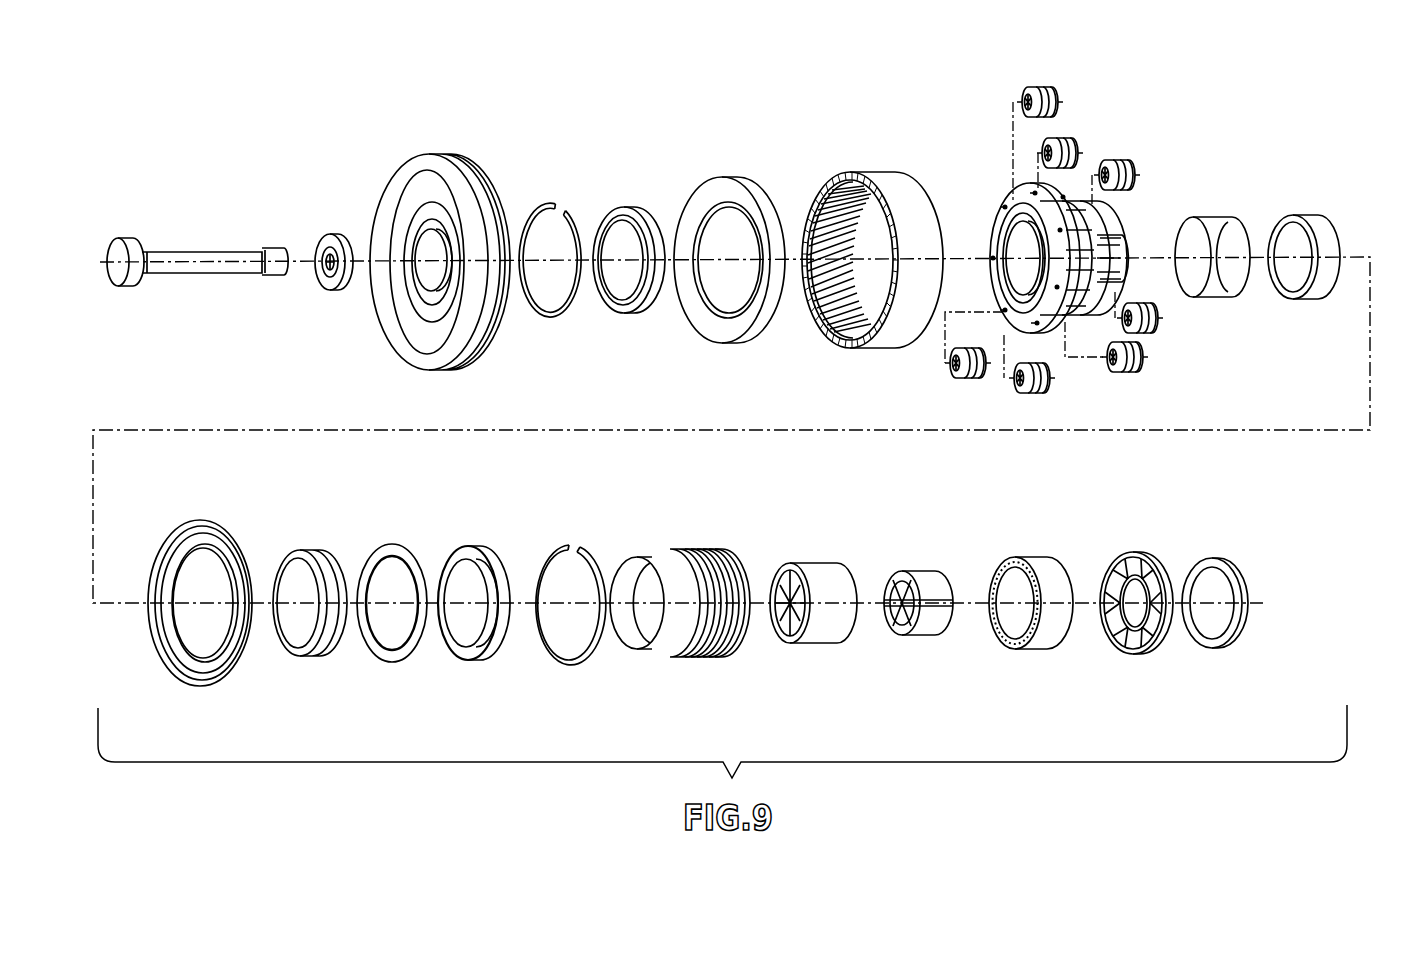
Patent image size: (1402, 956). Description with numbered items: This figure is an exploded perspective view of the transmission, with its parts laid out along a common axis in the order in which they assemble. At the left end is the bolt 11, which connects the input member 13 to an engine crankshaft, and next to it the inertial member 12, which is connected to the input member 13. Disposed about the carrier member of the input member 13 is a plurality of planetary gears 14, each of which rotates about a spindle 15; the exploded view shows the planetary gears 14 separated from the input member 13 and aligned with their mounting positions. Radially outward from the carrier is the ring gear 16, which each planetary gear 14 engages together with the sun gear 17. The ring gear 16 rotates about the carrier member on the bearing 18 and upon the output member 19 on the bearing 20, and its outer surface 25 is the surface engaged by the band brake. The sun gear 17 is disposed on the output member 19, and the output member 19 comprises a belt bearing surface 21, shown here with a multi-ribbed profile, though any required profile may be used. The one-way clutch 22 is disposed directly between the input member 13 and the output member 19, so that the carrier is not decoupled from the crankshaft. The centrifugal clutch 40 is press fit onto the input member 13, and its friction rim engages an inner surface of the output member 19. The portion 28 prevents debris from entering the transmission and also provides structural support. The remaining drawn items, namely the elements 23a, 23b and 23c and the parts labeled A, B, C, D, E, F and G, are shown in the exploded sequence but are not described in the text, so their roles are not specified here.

The bolt 11 is at (218, 252).
The inertial member 12 is at (392, 193).
The input member 13 is at (1010, 197).
The planetary gear 14 is at (1127, 158).
The spindle 15 is at (1022, 98).
The ring gear 16 is at (837, 177).
The sun gear 17 is at (307, 551).
The bearing 18 is at (648, 208).
The output member 19 is at (648, 558).
The bearing 20 is at (488, 545).
The belt bearing surface 21 is at (705, 548).
The one-way clutch 22 is at (1040, 558).
The splined sleeve 23a is at (917, 570).
The shaft stub 23b is at (1120, 238).
The splined sleeve 23c is at (818, 566).
The surface 25 is at (908, 195).
The portion 28 is at (197, 520).
The centrifugal clutch 40 is at (1158, 550).
The washer A is at (323, 288).
The snap ring B is at (553, 315).
The ring C is at (703, 332).
The sleeve D is at (1237, 292).
The sleeve E is at (1313, 292).
The ring F is at (382, 655).
The snap ring G is at (548, 662).